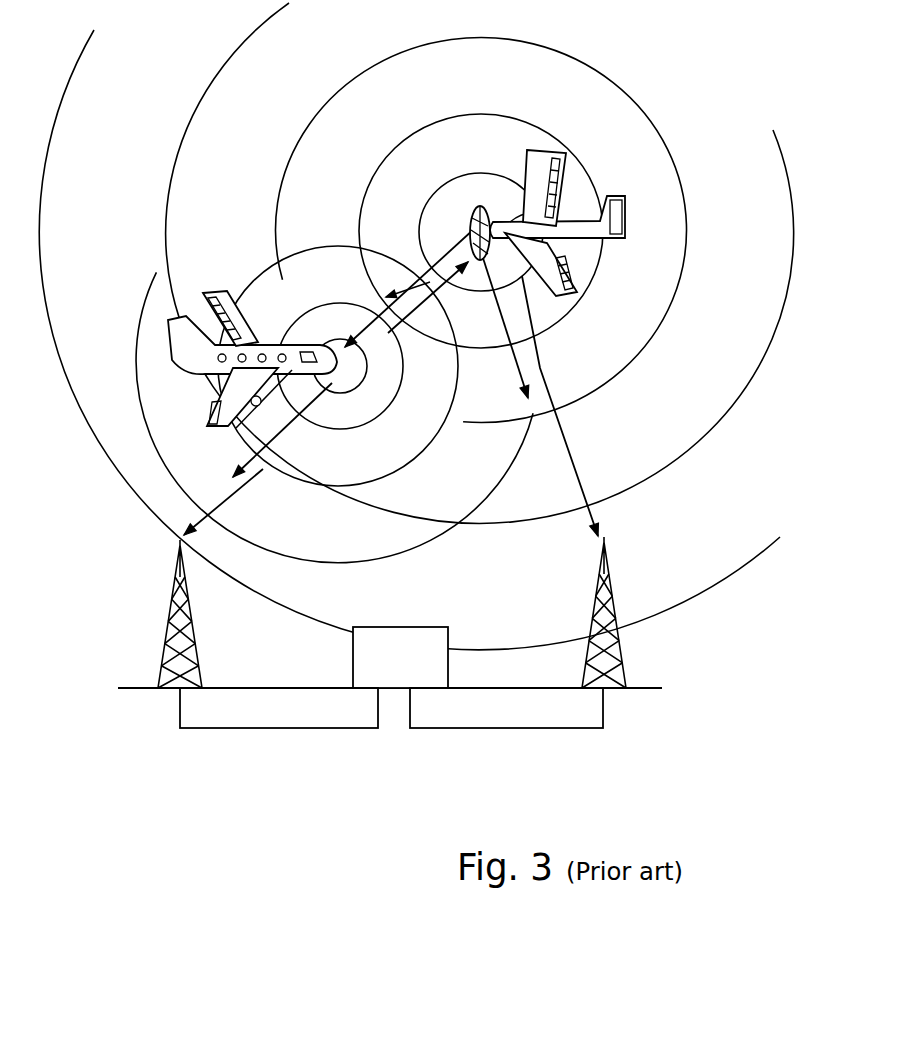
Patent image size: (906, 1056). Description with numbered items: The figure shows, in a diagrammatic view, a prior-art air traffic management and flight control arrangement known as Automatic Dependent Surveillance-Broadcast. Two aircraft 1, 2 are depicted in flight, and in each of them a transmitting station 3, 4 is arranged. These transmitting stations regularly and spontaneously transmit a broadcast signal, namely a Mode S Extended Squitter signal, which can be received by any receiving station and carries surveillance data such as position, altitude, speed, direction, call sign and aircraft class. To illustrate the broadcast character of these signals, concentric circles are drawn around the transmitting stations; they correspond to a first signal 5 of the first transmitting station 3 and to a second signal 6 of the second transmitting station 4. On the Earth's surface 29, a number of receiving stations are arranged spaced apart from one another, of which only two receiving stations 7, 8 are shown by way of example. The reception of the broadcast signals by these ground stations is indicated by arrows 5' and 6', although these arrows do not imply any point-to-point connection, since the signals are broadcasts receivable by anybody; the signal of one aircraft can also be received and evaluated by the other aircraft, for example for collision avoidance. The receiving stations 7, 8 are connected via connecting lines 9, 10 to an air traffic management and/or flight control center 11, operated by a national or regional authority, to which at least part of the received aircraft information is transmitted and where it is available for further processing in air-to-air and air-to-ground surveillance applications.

The aircraft 1 is at (222, 294).
The aircraft 2 is at (540, 172).
The transmitting station 3 is at (336, 352).
The transmitting station 4 is at (470, 228).
The first 1090 ES signal 5 is at (334, 404).
The arrow 5' is at (258, 459).
The second 1090 ES signal 6 is at (416, 326).
The arrow 6' is at (557, 397).
The receiving station 7 is at (178, 545).
The receiving station 8 is at (606, 545).
The connecting line 9 is at (262, 729).
The connecting line 10 is at (492, 729).
The air traffic management and/or flight control center 11 is at (411, 669).
The Earth's surface 29 is at (657, 687).